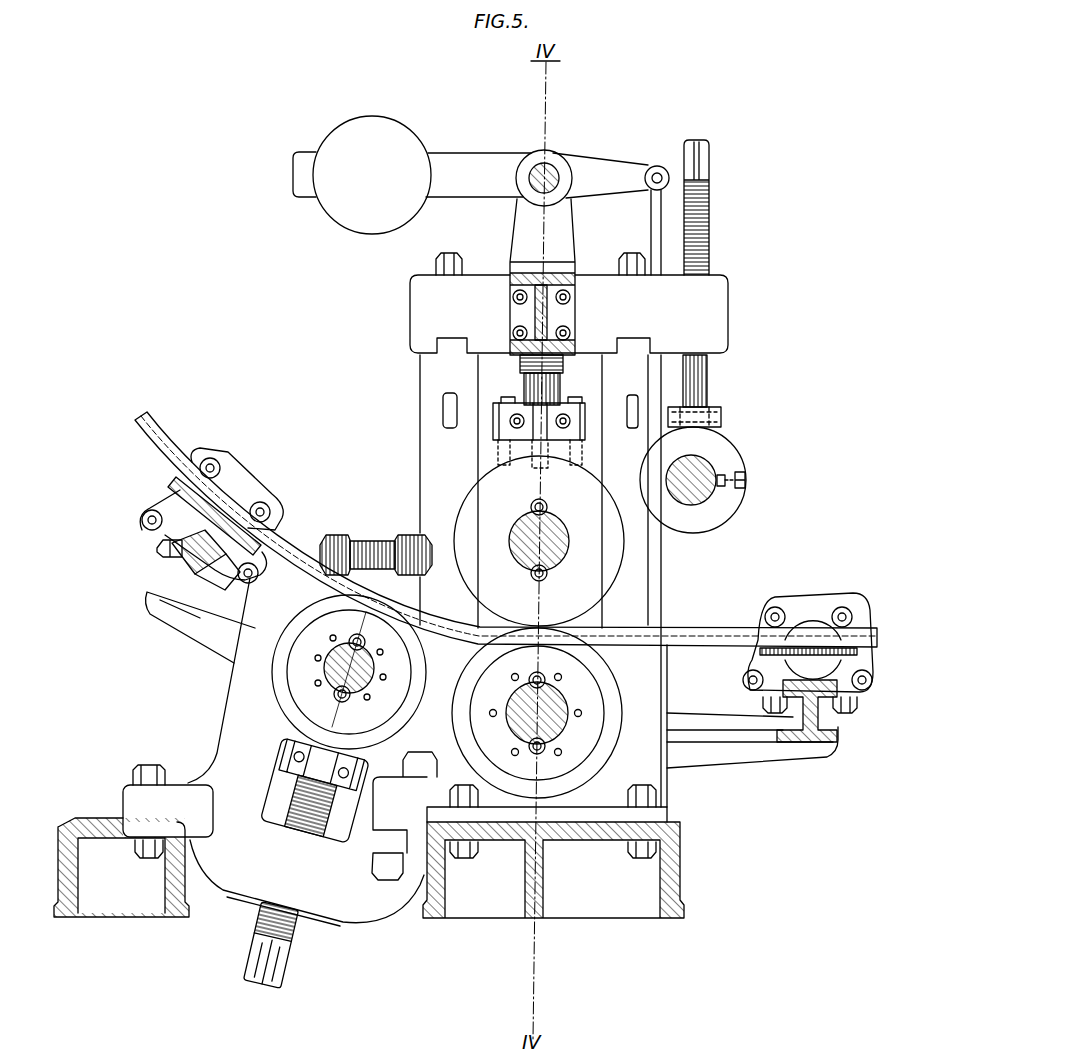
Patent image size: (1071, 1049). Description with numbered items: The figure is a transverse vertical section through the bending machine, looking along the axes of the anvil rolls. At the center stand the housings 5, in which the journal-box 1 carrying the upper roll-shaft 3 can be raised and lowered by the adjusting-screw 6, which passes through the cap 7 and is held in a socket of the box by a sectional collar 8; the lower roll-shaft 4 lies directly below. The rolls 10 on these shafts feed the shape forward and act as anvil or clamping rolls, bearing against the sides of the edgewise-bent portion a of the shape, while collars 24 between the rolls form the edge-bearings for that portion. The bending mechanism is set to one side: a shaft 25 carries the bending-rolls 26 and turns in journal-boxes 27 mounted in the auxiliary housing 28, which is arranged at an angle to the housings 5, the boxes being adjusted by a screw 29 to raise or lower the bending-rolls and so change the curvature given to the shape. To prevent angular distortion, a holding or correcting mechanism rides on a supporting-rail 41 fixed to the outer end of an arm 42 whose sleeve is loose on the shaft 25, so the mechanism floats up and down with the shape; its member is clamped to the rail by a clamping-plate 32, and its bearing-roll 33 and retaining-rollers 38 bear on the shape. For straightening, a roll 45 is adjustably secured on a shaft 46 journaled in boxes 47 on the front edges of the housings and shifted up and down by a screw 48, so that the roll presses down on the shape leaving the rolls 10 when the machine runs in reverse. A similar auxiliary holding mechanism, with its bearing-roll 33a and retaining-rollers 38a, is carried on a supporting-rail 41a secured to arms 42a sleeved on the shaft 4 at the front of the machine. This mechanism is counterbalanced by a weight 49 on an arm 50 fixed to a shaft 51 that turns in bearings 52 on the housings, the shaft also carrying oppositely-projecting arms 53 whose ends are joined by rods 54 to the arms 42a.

The journal-box 1 is at (490, 456).
The roll-shaft 3 is at (562, 545).
The roll-shaft 4 is at (512, 692).
The housing 5 is at (420, 478).
The adjusting-screw 6 is at (528, 380).
The cap 7 is at (569, 303).
The sectional collar 8 is at (583, 414).
The roll 10 is at (629, 690).
The collar 24 is at (463, 694).
The shaft 25 is at (332, 668).
The bending-roll 26 is at (306, 622).
The journal-box 27 is at (287, 736).
The auxiliary housing 28 is at (237, 708).
The screw 29 is at (258, 930).
The clamping-plate 32 is at (157, 547).
The bearing-roll 33 is at (175, 496).
The retaining-roller 38 is at (262, 501).
The supporting-rail 41 is at (180, 562).
The arm 42 is at (205, 630).
The roll 45 is at (709, 480).
The shaft 46 is at (706, 503).
The box 47 is at (662, 432).
The screw 48 is at (714, 236).
The weight 49 is at (362, 175).
The arm 50 is at (478, 175).
The shaft 51 is at (557, 166).
The bearing 52 is at (542, 277).
The arm 53 is at (611, 175).
The rod 54 is at (651, 225).
The portion of the shape a is at (690, 636).
The bearing-roll 33a is at (752, 670).
The retaining-roller 38a is at (781, 610).
The supporting-rail 41a is at (820, 722).
The arm 42a is at (750, 755).